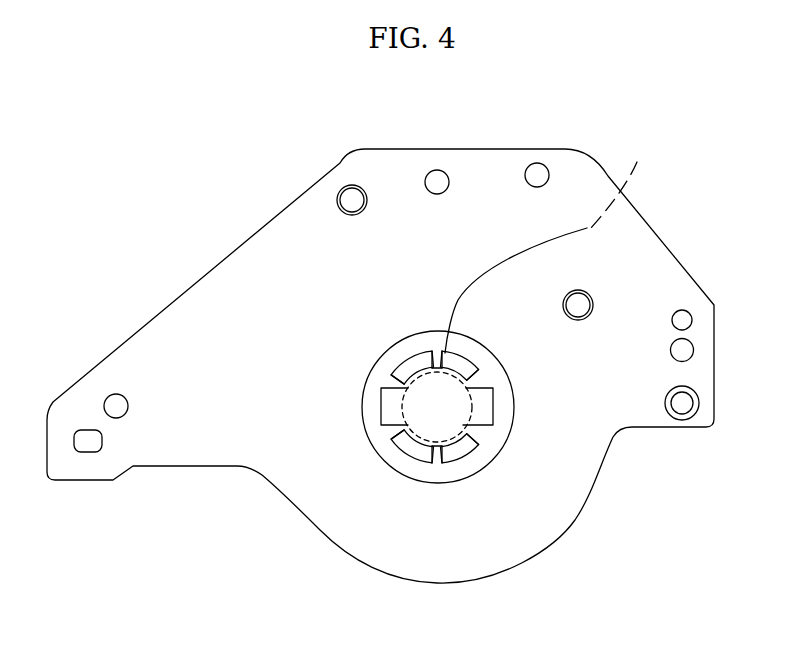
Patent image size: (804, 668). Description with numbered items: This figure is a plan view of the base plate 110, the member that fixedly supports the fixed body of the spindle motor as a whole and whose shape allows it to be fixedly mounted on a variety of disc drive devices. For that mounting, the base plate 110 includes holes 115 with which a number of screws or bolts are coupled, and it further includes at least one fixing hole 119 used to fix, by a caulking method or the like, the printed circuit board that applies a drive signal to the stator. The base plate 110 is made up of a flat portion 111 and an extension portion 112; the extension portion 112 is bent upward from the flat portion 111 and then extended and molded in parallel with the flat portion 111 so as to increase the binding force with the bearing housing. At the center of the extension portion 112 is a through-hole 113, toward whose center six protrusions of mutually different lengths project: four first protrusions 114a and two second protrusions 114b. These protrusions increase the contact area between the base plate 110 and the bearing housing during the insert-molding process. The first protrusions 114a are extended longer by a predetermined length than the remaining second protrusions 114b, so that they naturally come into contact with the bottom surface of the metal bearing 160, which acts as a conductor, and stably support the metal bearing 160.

The base plate 110 is at (656, 93).
The flat portion 111 is at (236, 262).
The extension portion 112 is at (405, 577).
The through-hole 113 is at (508, 440).
The first protrusions 114a is at (420, 471).
The second protrusions 114b is at (440, 331).
The holes 115 is at (536, 163).
The fixing hole 119 is at (348, 188).
The metal bearing 160 is at (626, 184).